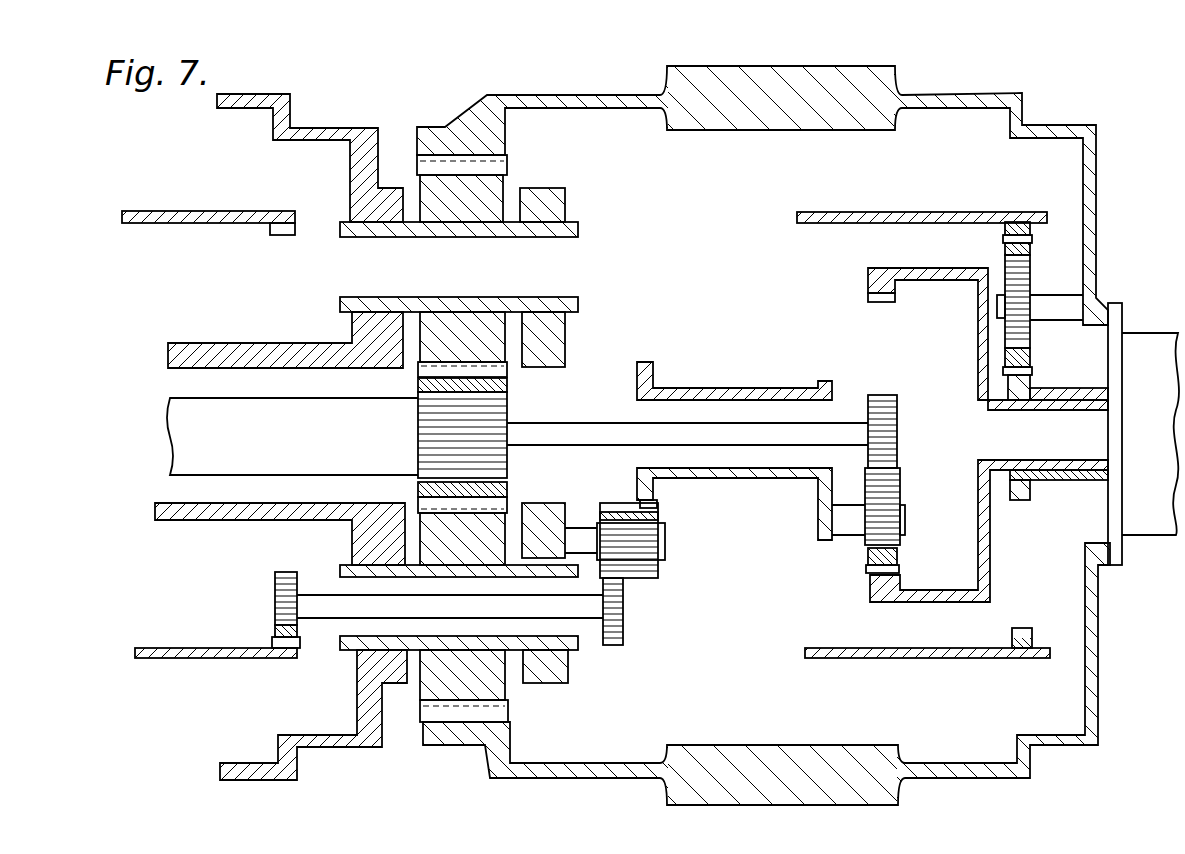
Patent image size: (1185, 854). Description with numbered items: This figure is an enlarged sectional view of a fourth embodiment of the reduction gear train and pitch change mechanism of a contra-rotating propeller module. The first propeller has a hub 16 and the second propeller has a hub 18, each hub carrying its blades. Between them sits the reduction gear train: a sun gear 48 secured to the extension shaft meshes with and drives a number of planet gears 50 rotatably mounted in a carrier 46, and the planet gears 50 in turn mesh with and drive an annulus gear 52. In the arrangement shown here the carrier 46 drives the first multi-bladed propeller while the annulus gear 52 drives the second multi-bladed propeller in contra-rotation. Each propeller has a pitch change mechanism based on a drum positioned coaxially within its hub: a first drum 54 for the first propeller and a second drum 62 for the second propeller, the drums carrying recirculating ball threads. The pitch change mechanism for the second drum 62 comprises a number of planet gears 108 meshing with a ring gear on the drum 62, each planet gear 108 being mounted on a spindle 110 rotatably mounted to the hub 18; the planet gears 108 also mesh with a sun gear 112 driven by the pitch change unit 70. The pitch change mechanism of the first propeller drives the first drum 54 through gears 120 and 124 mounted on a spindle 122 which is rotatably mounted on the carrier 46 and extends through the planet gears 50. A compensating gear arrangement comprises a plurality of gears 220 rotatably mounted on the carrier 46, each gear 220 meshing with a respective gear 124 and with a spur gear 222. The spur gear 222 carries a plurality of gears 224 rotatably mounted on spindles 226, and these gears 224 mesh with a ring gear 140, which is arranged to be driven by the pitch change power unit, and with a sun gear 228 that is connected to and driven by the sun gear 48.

The hub 16 is at (287, 97).
The hub 18 is at (890, 75).
The carrier 46 is at (266, 343).
The sun gear 48 is at (510, 477).
The planet gears 50 is at (486, 297).
The annulus gear 52 is at (497, 150).
The first drum 54 is at (187, 648).
The second drum 62 is at (895, 660).
The pitch change unit 70 is at (1148, 340).
The planet gears 108 is at (1030, 262).
The spindle 110 is at (1052, 300).
The sun gear 112 is at (1030, 383).
The gear 120 is at (275, 590).
The spindle 122 is at (335, 610).
The gear 124 is at (620, 615).
The ring gear 140 is at (866, 280).
The gears 220 is at (650, 553).
The spur gear 222 is at (655, 492).
The gears 224 is at (900, 503).
The spindles 226 is at (853, 530).
The sun gear 228 is at (898, 395).